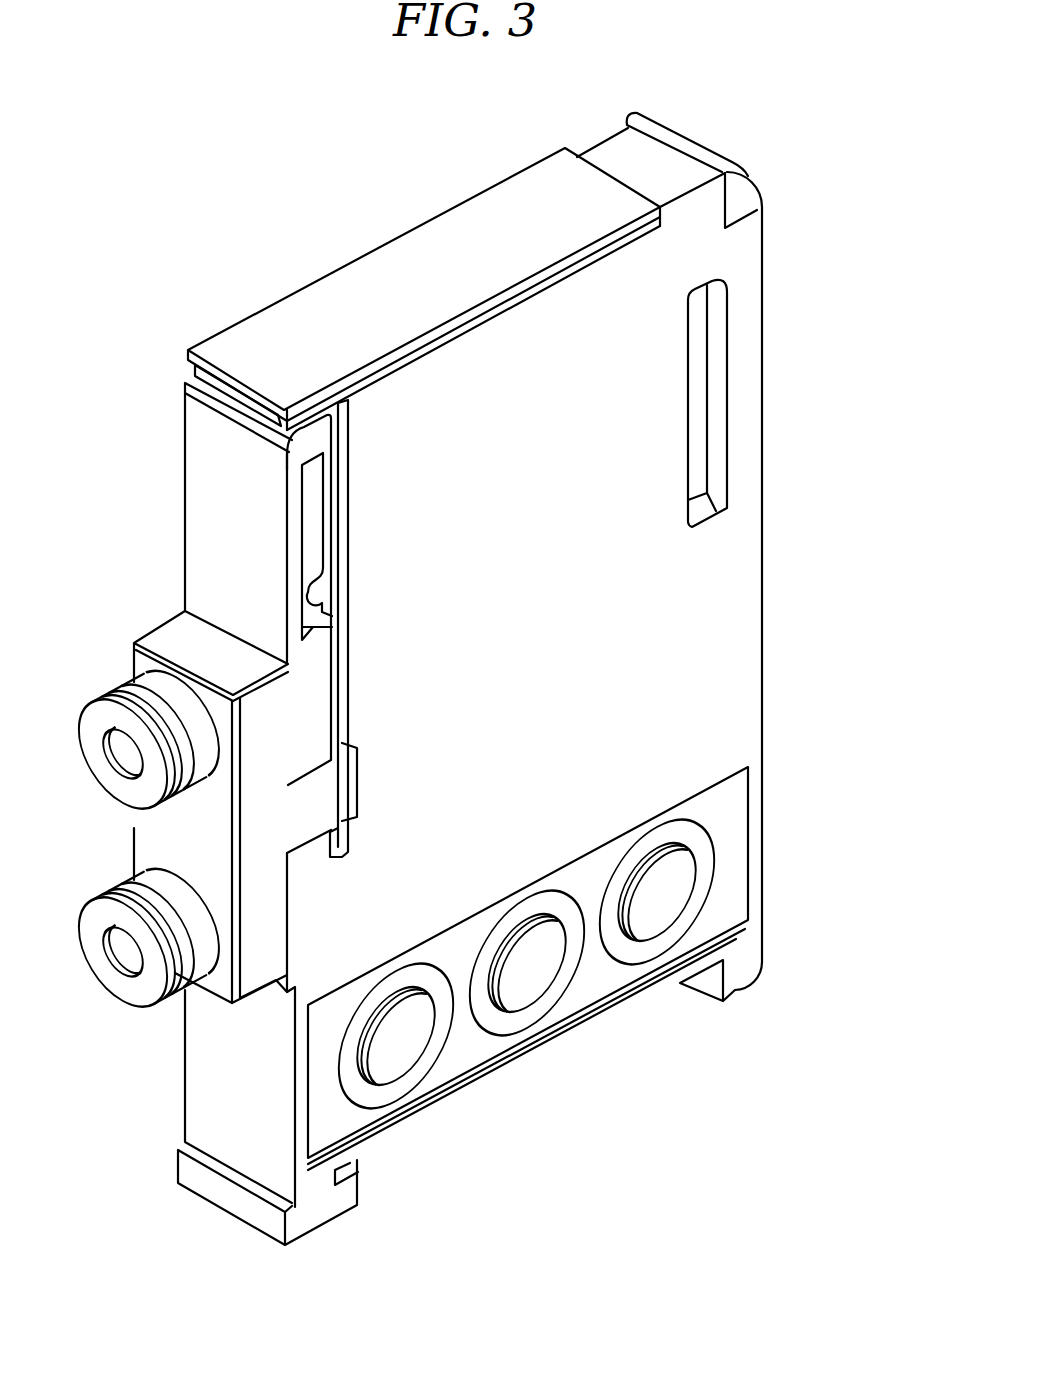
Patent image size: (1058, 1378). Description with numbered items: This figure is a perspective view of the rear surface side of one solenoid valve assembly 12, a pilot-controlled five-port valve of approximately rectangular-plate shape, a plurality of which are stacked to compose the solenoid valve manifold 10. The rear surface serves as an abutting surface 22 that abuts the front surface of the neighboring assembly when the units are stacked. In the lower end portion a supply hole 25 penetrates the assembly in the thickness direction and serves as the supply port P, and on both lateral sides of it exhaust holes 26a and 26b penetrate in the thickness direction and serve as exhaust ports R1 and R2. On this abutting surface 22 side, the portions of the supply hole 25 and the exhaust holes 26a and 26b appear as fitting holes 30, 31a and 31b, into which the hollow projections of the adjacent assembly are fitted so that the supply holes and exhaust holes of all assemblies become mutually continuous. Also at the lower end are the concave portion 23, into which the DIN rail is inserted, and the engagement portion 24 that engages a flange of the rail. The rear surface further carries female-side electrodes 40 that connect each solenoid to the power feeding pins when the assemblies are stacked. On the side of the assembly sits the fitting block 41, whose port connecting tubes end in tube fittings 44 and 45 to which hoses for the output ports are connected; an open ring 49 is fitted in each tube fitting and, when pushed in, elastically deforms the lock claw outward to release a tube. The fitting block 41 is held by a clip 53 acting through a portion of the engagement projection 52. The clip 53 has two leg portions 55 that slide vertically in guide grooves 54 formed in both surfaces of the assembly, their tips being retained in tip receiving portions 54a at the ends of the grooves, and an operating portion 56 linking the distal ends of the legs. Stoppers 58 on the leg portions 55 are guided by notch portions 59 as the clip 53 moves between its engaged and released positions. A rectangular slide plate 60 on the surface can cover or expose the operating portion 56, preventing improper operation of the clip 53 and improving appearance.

The solenoid valve manifold 10 is at (775, 232).
The solenoid valve assembly 12 is at (733, 141).
The abutting surface 22 is at (735, 585).
The concave portion 23 is at (640, 1003).
The engagement portion 24 is at (345, 1193).
The supply hole 25 is at (543, 1003).
The exhaust hole 26a is at (378, 1027).
The exhaust hole 26b is at (640, 883).
The fitting hole 30 is at (548, 1017).
The fitting hole 31a is at (417, 1080).
The fitting hole 31b is at (672, 932).
The electrodes 40 is at (700, 388).
The fitting block 41 is at (140, 840).
The tube fitting 44 is at (193, 983).
The tube fitting 45 is at (148, 668).
The open ring 49 is at (119, 865).
The engagement projection 52 is at (318, 793).
The clip 53 is at (337, 405).
The guide groove 54 is at (343, 690).
The tip receiving portion 54a is at (345, 845).
The leg portion 55 is at (323, 487).
The operating portion 56 is at (225, 402).
The stopper 58 is at (325, 595).
The notch portion 59 is at (312, 526).
The slide plate 60 is at (418, 258).
The supply port P is at (551, 976).
The exhaust port R1 is at (431, 1047).
The exhaust port R2 is at (719, 907).